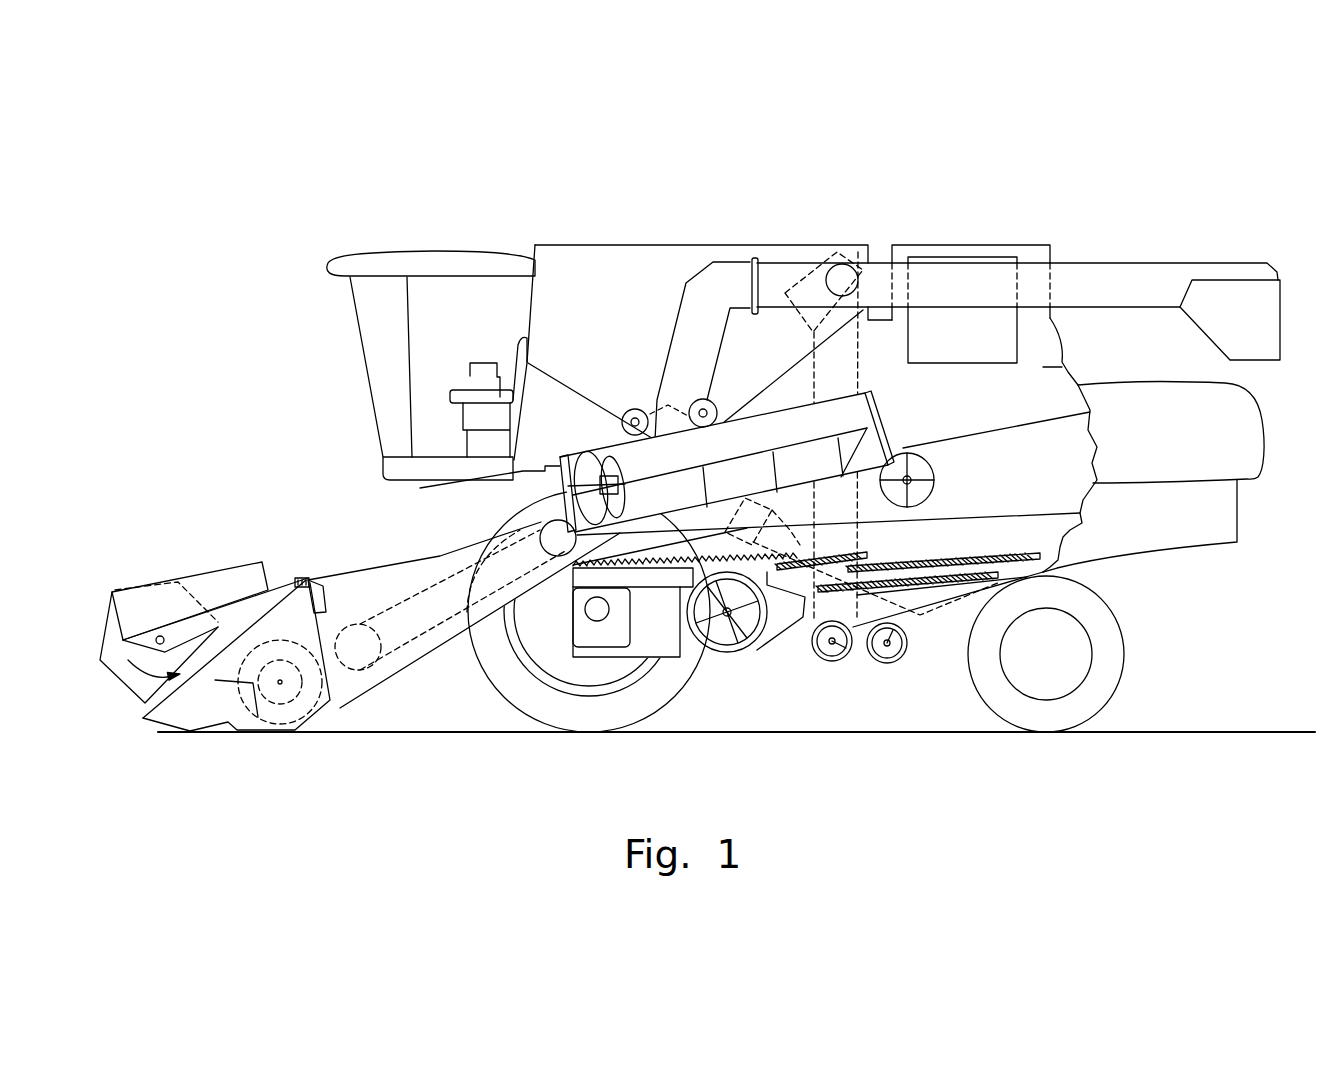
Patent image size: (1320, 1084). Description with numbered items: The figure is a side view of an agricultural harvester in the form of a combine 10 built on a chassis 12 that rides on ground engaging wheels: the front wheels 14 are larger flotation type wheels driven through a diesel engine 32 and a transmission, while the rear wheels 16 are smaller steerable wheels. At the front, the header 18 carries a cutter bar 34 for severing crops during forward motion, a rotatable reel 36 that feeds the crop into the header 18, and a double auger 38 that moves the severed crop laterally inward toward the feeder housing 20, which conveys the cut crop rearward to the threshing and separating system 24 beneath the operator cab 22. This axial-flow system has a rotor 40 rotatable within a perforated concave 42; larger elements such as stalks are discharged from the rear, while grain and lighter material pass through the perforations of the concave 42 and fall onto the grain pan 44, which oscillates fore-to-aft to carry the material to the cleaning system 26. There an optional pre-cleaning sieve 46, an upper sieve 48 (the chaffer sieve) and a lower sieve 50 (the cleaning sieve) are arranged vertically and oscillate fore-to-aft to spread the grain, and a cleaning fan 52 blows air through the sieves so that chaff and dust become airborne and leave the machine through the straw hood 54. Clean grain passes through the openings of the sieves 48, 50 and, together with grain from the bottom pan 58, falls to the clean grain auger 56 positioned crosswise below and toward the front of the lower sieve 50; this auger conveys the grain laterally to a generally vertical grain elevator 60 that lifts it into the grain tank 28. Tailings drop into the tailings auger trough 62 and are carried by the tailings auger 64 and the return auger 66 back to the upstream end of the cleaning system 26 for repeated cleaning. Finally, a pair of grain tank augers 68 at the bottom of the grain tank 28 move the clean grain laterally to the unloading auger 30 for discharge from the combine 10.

The combine 10 is at (417, 227).
The chassis 12 is at (1060, 570).
The front wheels 14 is at (502, 690).
The rear wheels 16 is at (1120, 673).
The header 18 is at (193, 559).
The feeder housing 20 is at (400, 565).
The operator cab 22 is at (360, 347).
The threshing and separating system 24 is at (497, 506).
The cleaning system 26 is at (793, 663).
The grain tank 28 is at (590, 250).
The unloading auger 30 is at (1140, 270).
The diesel engine 32 is at (952, 258).
The cutter bar 34 is at (207, 730).
The rotatable reel 36 is at (105, 630).
The double auger 38 is at (281, 705).
The rotor 40 is at (588, 462).
The perforated concave 42 is at (764, 438).
The grain pan 44 is at (568, 592).
The pre-cleaning sieve 46 is at (863, 553).
The upper sieve 48 is at (963, 554).
The lower sieve 50 is at (933, 585).
The cleaning fan 52 is at (728, 640).
The straw hood 54 is at (1247, 423).
The clean grain auger 56 is at (833, 661).
The bottom pan 58 is at (963, 597).
The grain elevator 60 is at (862, 370).
The tailings auger trough 62 is at (940, 595).
The tailings auger 64 is at (887, 665).
The return auger 66 is at (804, 540).
The grain tank augers 68 is at (634, 409).